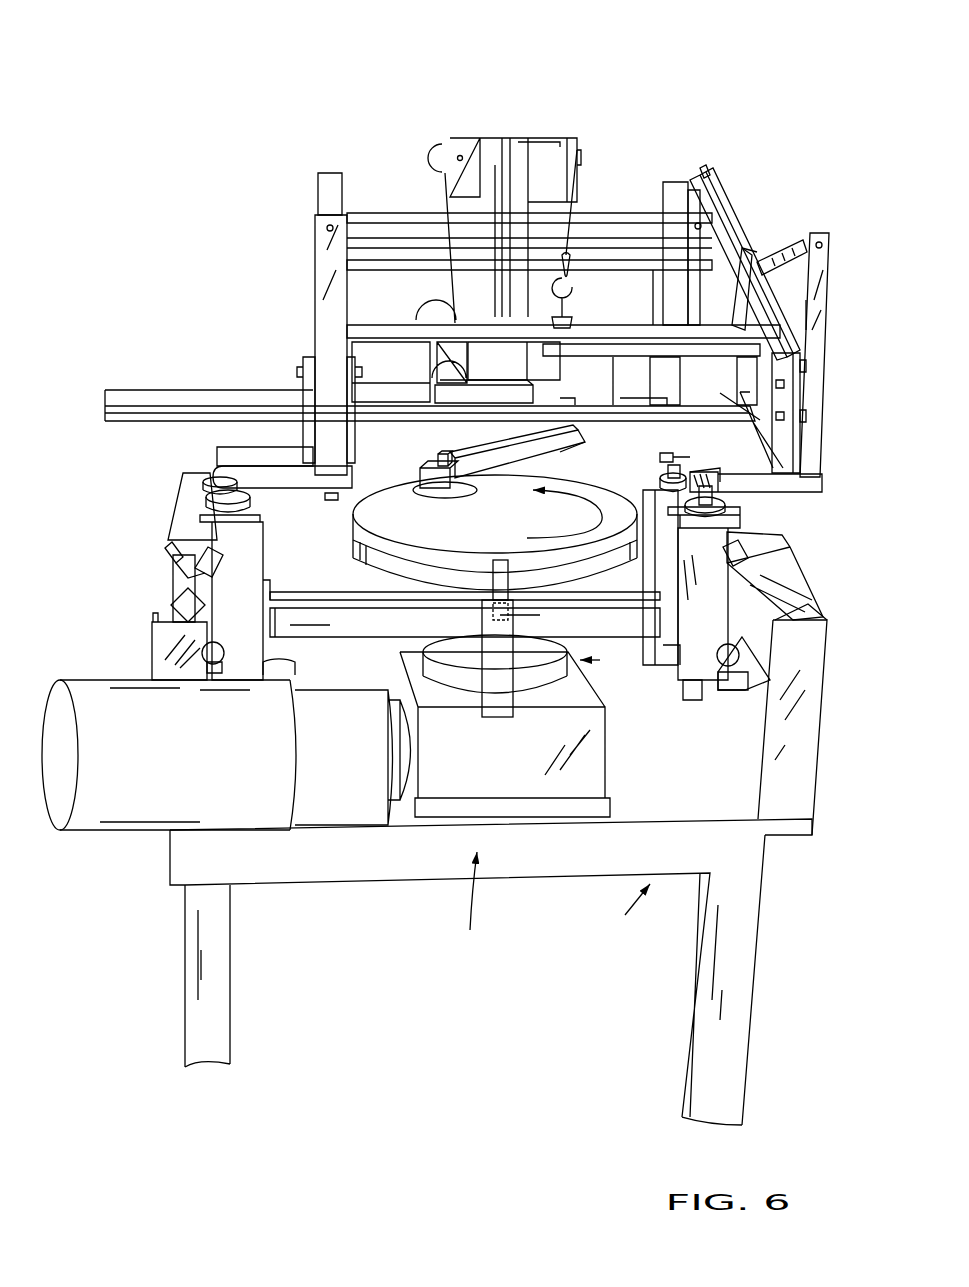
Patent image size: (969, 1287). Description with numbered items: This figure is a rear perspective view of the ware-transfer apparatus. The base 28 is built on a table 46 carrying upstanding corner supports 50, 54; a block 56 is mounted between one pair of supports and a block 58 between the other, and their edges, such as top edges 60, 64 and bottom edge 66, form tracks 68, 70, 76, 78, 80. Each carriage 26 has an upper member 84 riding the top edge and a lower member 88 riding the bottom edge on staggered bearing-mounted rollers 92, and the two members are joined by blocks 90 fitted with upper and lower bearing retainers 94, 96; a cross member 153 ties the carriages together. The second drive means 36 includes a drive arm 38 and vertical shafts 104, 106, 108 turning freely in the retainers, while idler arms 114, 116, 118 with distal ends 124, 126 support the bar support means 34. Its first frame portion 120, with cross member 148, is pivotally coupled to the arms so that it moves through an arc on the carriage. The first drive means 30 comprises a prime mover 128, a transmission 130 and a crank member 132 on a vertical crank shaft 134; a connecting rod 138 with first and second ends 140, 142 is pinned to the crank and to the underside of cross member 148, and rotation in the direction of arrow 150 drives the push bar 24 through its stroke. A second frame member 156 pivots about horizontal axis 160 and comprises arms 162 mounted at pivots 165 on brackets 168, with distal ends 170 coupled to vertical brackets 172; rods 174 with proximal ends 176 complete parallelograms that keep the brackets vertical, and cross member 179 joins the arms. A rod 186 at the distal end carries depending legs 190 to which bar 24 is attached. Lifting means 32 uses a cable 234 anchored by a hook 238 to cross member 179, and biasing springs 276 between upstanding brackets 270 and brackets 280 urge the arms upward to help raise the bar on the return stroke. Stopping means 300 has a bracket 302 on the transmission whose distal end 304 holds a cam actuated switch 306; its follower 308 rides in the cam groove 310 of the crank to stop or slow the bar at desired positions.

The push bar 24 is at (183, 382).
The carriage 26 is at (268, 555).
The base 28 is at (628, 922).
The first drive means 30 is at (470, 903).
The lifting means 32 is at (540, 120).
The bar support means 34 is at (712, 108).
The second drive means 36 is at (305, 660).
The drive arm 38 is at (240, 455).
The table 46 is at (491, 955).
The corner support 50 is at (160, 658).
The corner support 54 is at (800, 697).
The block 56 is at (128, 597).
The block 58 is at (744, 656).
The top edge 60 is at (150, 550).
The top edge 64 is at (815, 562).
The bottom edge 66 is at (760, 695).
The track 68 is at (180, 605).
The track 70 is at (196, 592).
The track 76 is at (765, 585).
The track 78 is at (800, 592).
The track 80 is at (758, 670).
The carriage member 84 is at (178, 512).
The carriage member 88 is at (735, 690).
The block 90 is at (245, 500).
The roller 92 is at (163, 556).
The bearing retainer 94 is at (205, 480).
The bearing retainer 96 is at (683, 690).
The shaft 104 is at (245, 507).
The shaft 106 is at (670, 465).
The shaft 108 is at (722, 500).
The idler arm 114 is at (220, 475).
The idler arm 116 is at (740, 470).
The idler arm 118 is at (822, 483).
The first frame portion 120 is at (362, 462).
The distal end 124 is at (332, 500).
The distal end 126 is at (822, 474).
The prime mover 128 is at (850, 490).
The transmission 130 is at (505, 734).
The crank member 132 is at (495, 532).
The crank shaft 134 is at (470, 630).
The connecting rod 138 is at (520, 450).
The first end 140 is at (437, 488).
The second end 142 is at (580, 430).
The cross member 148 is at (582, 400).
The arrow 150 is at (600, 518).
The cross member 153 is at (325, 608).
The second frame member 156 is at (742, 208).
The horizontally extending axis 160 is at (395, 405).
The arm 162 is at (735, 298).
The pivot 165 is at (303, 395).
The bracket 168 is at (315, 345).
The distal end 170 is at (694, 190).
The bracket 172 is at (708, 170).
The rod 174 is at (745, 222).
The proximal end 176 is at (824, 330).
The cross member 179 is at (615, 325).
The rod 186 is at (368, 213).
The depending leg 190 is at (330, 173).
The cable 234 is at (430, 285).
The hook 238 is at (571, 300).
The upstanding bracket 270 is at (829, 265).
The biasing spring 276 is at (797, 245).
The bracket 280 is at (752, 255).
The stopping means 300 is at (610, 660).
The bracket 302 is at (498, 712).
The distal end 304 is at (510, 610).
The cam actuated switch 306 is at (420, 592).
The follower 308 is at (500, 575).
The cam groove 310 is at (386, 560).